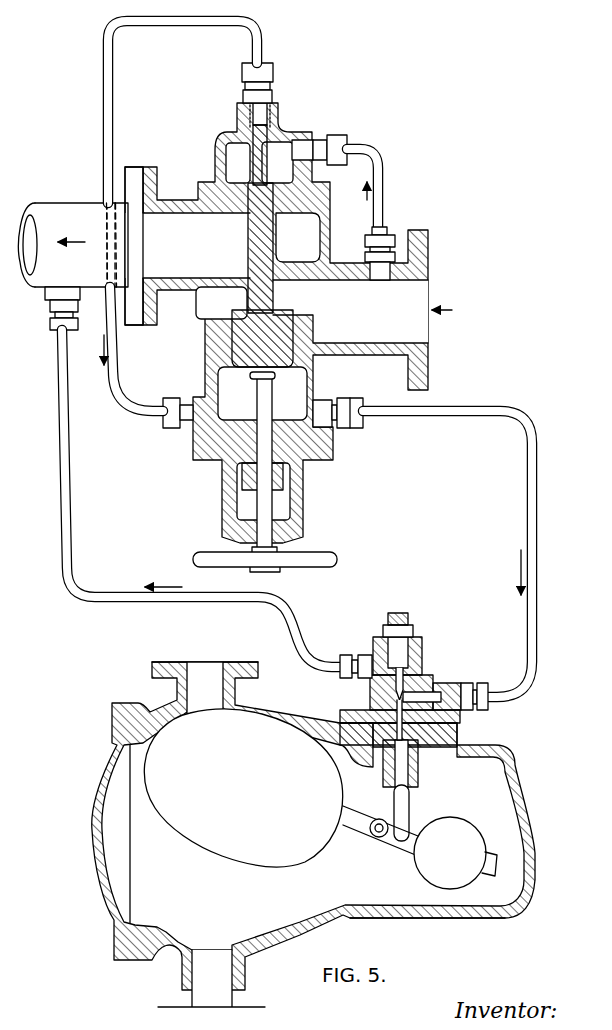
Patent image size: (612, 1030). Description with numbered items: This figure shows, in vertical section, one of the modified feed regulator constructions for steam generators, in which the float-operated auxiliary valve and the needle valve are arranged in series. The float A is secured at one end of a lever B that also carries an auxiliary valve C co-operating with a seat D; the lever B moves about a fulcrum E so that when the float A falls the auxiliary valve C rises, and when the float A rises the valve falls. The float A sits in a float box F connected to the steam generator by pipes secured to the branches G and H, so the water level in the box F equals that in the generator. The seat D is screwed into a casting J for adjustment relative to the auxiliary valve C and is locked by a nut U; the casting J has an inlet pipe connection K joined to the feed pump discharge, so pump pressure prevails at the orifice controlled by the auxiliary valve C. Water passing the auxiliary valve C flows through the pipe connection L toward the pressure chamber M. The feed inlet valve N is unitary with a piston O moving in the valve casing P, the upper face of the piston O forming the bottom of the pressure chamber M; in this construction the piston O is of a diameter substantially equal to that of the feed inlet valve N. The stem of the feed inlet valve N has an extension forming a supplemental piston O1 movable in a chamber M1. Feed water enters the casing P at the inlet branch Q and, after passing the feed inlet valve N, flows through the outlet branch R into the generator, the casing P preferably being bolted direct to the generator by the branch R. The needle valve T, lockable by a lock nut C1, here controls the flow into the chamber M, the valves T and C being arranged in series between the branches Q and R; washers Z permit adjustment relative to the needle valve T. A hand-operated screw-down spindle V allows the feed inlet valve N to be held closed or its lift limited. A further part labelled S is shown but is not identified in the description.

The float A is at (243, 788).
The lever B is at (353, 822).
The auxiliary valve C is at (395, 695).
The lock nut C1 is at (243, 96).
The auxiliary valve seat D is at (406, 687).
The fulcrum E is at (378, 833).
The float box F is at (392, 913).
The branch G is at (211, 978).
The branch H is at (205, 689).
The casting J is at (418, 648).
The inlet pipe connection K is at (527, 527).
The pipe connection L is at (193, 599).
The pressure chamber M is at (262, 393).
The chamber M1 is at (286, 172).
The feed inlet valve N is at (276, 255).
The piston O is at (262, 338).
The supplemental piston O1 is at (262, 208).
The valve casing P is at (199, 311).
The inlet branch Q is at (362, 311).
The outlet branch R is at (134, 246).
The packing S is at (271, 120).
The needle valve T is at (263, 152).
The nut U is at (410, 633).
The hand-operated screw-down spindle V is at (263, 462).
The washers Z is at (238, 163).